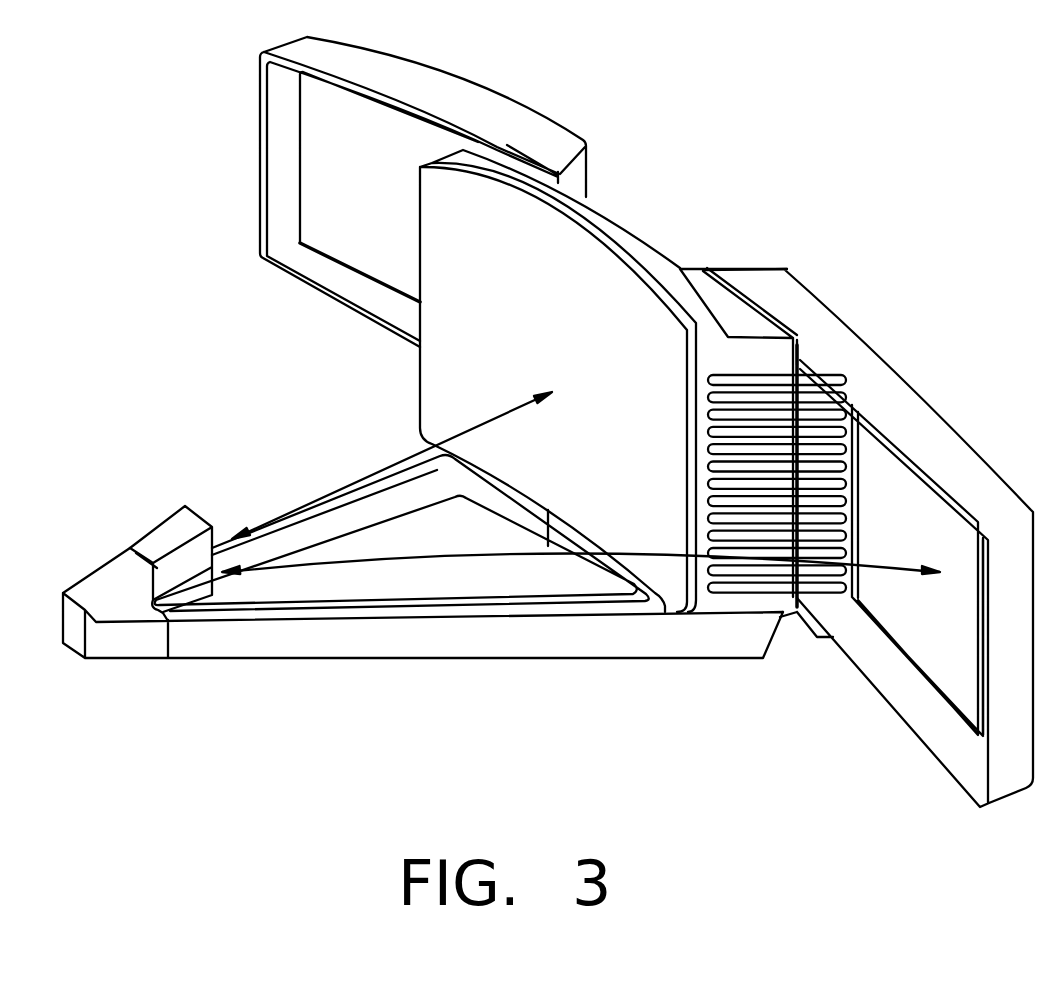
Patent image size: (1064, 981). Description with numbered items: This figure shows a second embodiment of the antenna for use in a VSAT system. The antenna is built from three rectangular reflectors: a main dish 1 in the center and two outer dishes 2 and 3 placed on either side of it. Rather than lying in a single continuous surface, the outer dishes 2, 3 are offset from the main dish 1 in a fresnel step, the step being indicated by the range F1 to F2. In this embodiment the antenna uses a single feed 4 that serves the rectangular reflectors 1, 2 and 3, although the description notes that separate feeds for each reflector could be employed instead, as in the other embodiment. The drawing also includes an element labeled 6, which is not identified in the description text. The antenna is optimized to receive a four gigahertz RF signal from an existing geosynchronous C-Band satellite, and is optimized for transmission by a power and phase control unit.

The main dish 1 is at (455, 368).
The outer dish 2 is at (318, 150).
The outer dish 3 is at (915, 610).
The single feed 4 is at (161, 533).
The light exit surface 6 is at (943, 690).
The fresnel step F1 is at (363, 478).
The fresnel step F2 is at (420, 553).